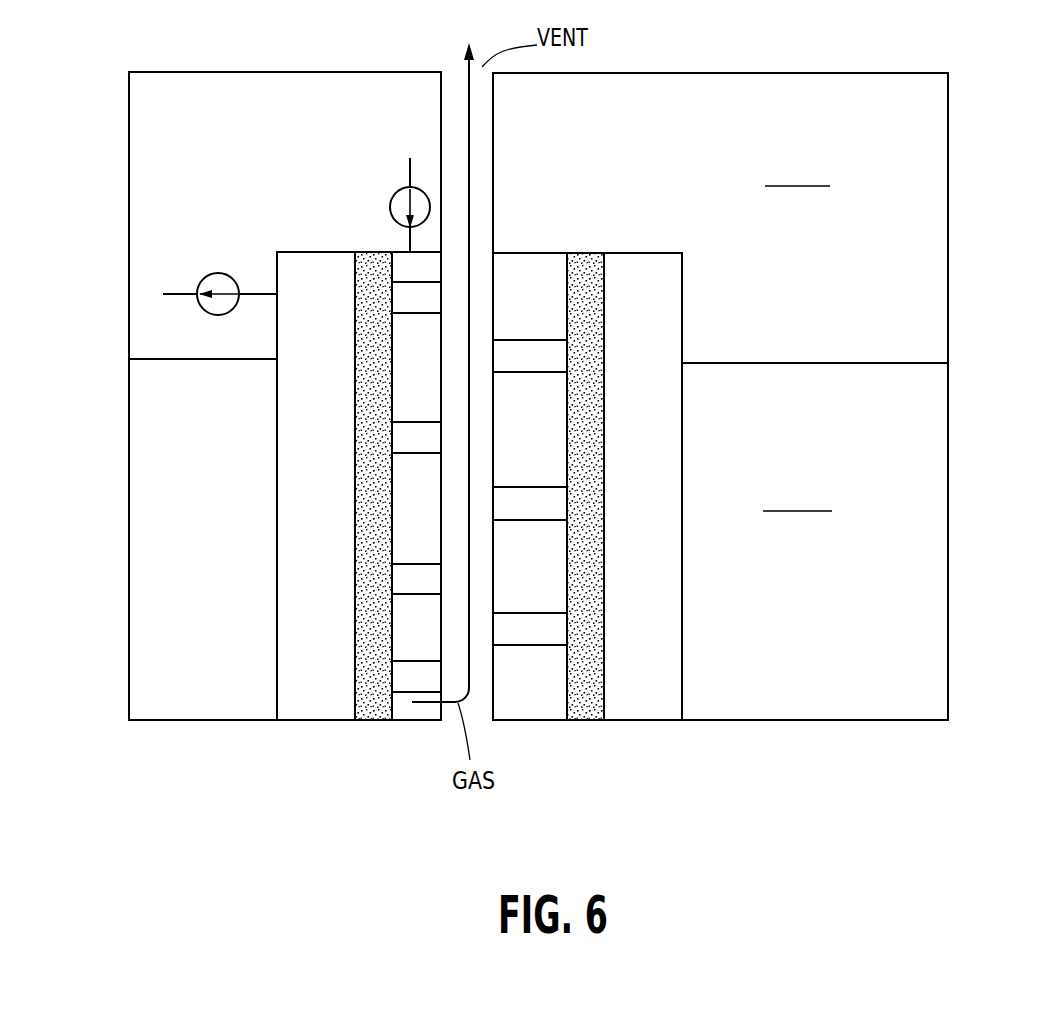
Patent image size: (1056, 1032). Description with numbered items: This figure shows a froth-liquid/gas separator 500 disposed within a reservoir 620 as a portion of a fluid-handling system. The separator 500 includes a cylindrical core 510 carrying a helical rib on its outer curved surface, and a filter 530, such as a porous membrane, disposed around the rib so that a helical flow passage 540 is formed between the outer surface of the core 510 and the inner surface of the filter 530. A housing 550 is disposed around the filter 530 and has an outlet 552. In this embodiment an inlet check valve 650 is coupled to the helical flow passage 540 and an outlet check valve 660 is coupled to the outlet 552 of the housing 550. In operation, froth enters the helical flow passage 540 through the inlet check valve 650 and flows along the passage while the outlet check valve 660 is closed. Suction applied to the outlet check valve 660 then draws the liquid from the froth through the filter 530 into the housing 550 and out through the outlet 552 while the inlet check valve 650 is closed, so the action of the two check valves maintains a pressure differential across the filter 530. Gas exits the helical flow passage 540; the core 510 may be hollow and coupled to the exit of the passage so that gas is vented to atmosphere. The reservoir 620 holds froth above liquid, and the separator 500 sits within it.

The froth-liquid/gas separator 500 is at (690, 647).
The cylindrical core 510 is at (493, 268).
The filter 530 is at (597, 278).
The helical flow passage 540 is at (540, 427).
The housing 550 is at (277, 631).
The outlet 552 is at (253, 292).
The reservoir 620 is at (953, 166).
The inlet check valve 650 is at (395, 197).
The outlet check valve 660 is at (201, 311).